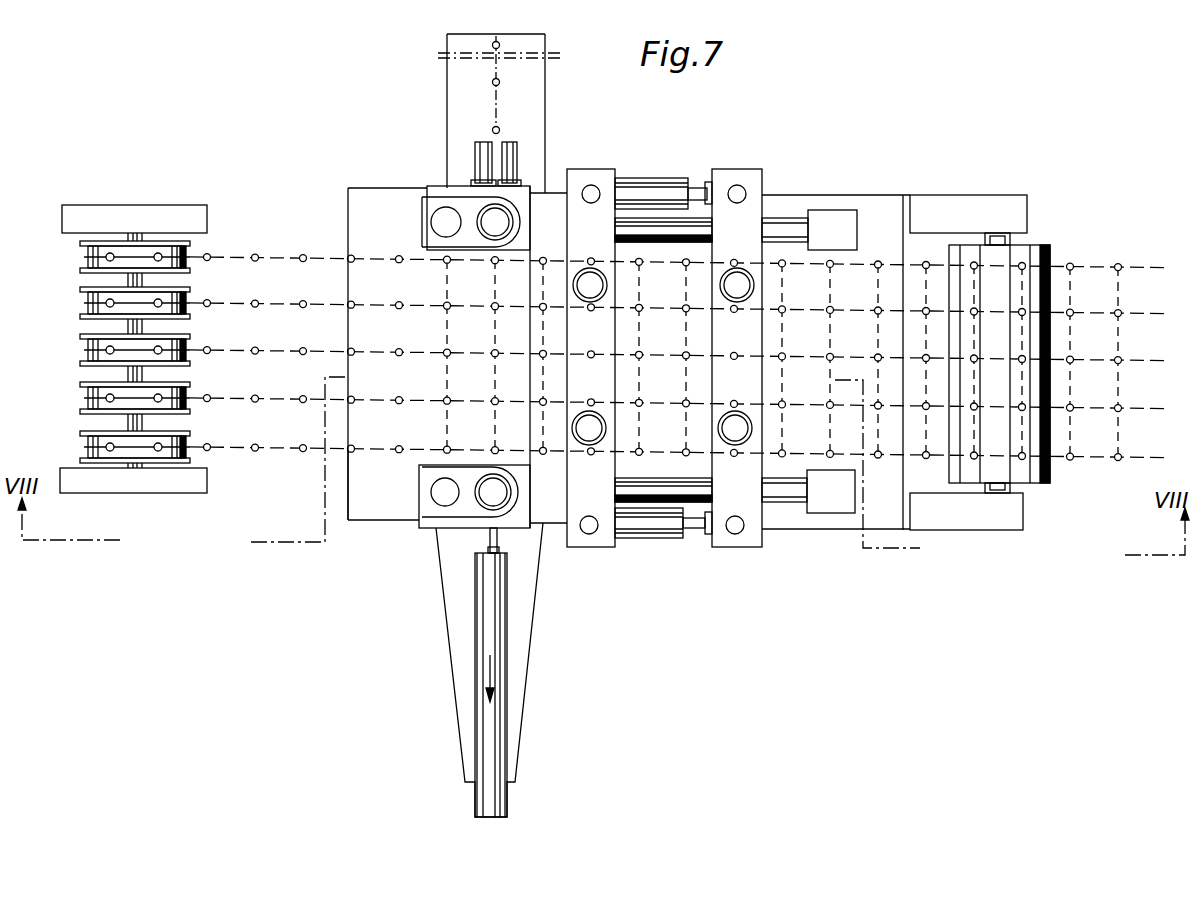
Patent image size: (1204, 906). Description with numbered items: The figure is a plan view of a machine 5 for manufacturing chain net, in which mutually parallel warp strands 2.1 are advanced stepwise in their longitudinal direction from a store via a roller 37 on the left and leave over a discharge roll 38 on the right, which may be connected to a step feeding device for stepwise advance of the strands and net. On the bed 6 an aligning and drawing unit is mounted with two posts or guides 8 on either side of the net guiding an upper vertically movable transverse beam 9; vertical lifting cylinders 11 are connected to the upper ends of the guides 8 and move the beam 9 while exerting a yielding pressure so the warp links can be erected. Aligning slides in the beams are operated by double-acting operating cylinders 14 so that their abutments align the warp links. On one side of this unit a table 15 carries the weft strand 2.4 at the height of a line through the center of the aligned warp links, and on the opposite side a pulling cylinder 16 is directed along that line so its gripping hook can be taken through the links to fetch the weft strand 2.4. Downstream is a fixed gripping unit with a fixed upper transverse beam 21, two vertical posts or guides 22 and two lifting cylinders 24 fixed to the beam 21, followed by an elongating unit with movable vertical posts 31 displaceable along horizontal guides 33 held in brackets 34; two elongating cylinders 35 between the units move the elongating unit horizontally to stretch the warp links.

The machine 5 is at (352, 157).
The warp strand 2.1 is at (237, 255).
The weft strand 2.4 is at (494, 98).
The bed 6 is at (377, 512).
The posts or guides 8 is at (440, 222).
The upper vertically movable transverse beam 9 is at (457, 357).
The vertical lifting cylinders 11 is at (503, 225).
The double-acting operating cylinders 14 is at (483, 153).
The table 15 is at (546, 91).
The pulling cylinder 16 is at (487, 637).
The fixed upper transverse beam 21 is at (720, 170).
The vertical posts or guides 22 is at (590, 185).
The lifting cylinders 24 is at (595, 275).
The movable vertical posts 31 is at (740, 185).
The horizontal guides 33 is at (783, 217).
The brackets 34 is at (835, 215).
The elongating cylinders 35 is at (645, 177).
The roller 37 is at (86, 350).
The discharge roll 38 is at (1048, 480).